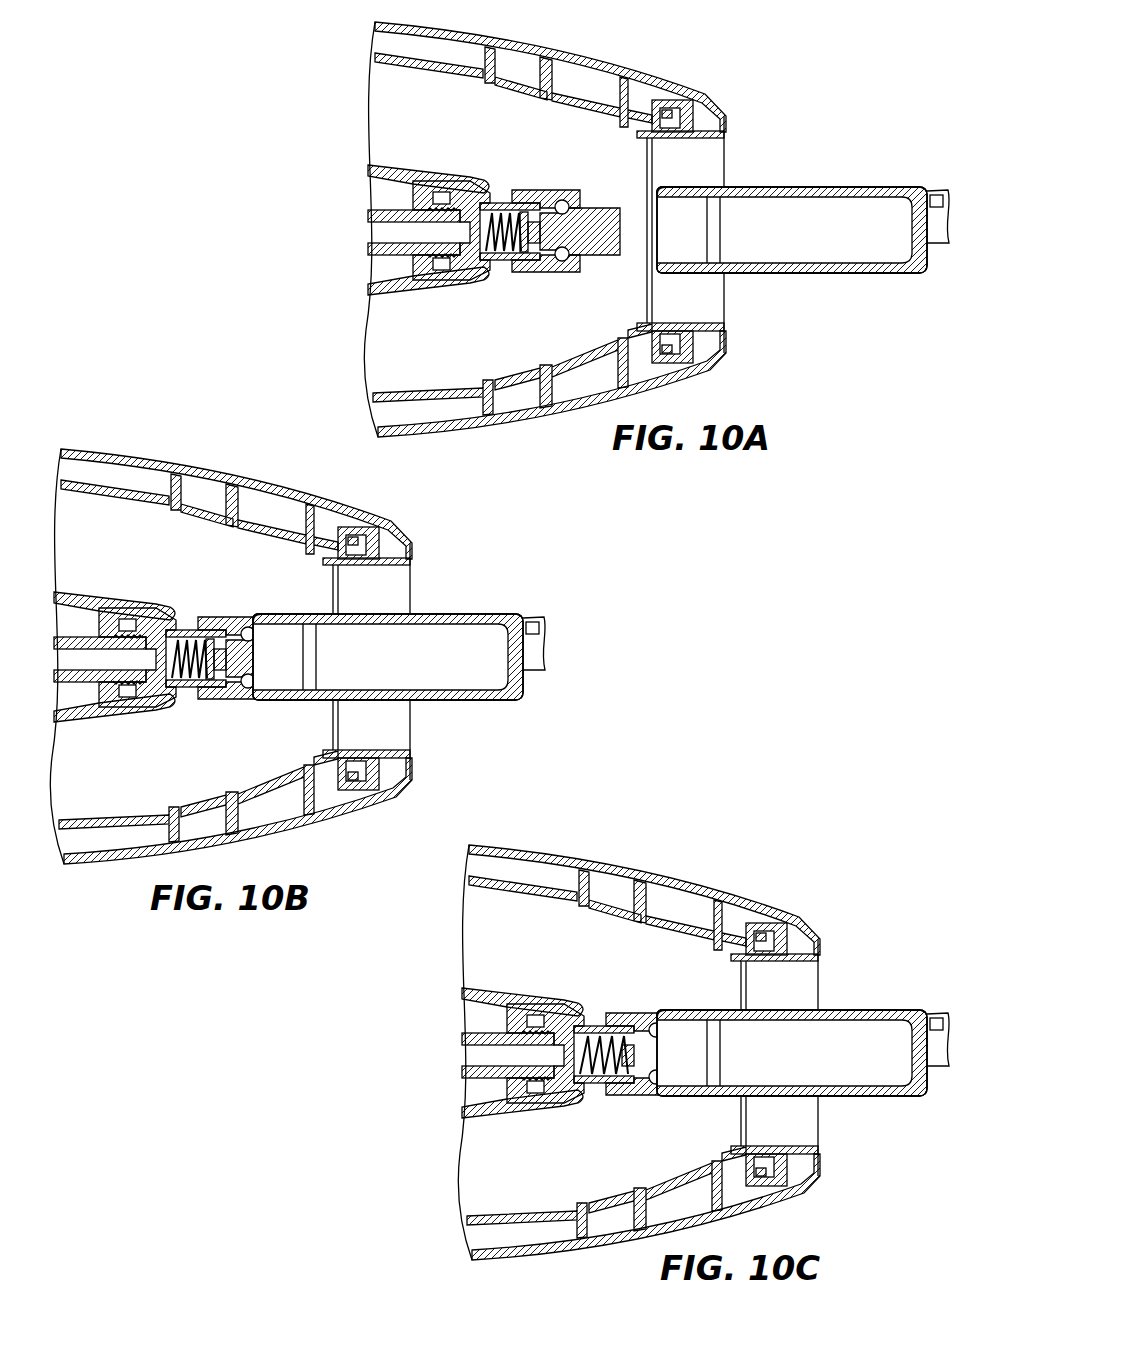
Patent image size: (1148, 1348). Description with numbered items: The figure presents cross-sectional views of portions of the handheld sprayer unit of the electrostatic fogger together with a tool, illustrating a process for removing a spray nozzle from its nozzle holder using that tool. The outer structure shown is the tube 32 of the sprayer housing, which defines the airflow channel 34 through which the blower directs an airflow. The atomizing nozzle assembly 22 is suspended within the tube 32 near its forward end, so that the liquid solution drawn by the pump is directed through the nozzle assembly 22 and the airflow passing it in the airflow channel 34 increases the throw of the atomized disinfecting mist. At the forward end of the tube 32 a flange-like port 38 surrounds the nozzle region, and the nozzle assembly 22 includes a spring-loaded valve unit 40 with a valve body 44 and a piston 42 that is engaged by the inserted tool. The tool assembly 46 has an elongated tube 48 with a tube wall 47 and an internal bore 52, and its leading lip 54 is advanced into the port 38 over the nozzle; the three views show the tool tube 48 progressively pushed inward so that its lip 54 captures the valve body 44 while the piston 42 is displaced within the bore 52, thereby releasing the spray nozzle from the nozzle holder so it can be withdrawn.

In FIG. 10A, the atomizing nozzle assembly 22 is at (565, 145).
In FIG. 10B, the atomizing nozzle assembly 22 is at (233, 562).
In FIG. 10C, the atomizing nozzle assembly 22 is at (641, 962).
In FIG. 10A, the tube 32 is at (563, 53).
In FIG. 10B, the tube 32 is at (200, 470).
In FIG. 10C, the tube 32 is at (610, 868).
In FIG. 10A, the airflow channel 34 is at (485, 332).
In FIG. 10B, the airflow channel 34 is at (171, 759).
In FIG. 10C, the airflow channel 34 is at (579, 1155).
In FIG. 10A, the flange 38 is at (728, 298).
In FIG. 10B, the flange 38 is at (414, 725).
In FIG. 10C, the flange 38 is at (822, 1121).
In FIG. 10A, the valve assembly 40 is at (523, 180).
In FIG. 10B, the valve assembly 40 is at (205, 607).
In FIG. 10C, the valve assembly 40 is at (613, 1003).
In FIG. 10A, the piston 42 is at (598, 256).
In FIG. 10B, the piston 42 is at (284, 683).
In FIG. 10C, the piston 42 is at (758, 1076).
In FIG. 10A, the valve body 44 is at (527, 272).
In FIG. 10B, the valve body 44 is at (210, 700).
In FIG. 10C, the valve body 44 is at (616, 1096).
In FIG. 10A, the coupling assembly 46 is at (892, 333).
In FIG. 10B, the coupling assembly 46 is at (540, 581).
In FIG. 10C, the coupling assembly 46 is at (898, 920).
In FIG. 10A, the tube wall 47 is at (887, 188).
In FIG. 10B, the tube wall 47 is at (482, 612).
In FIG. 10C, the tube wall 47 is at (890, 1009).
In FIG. 10A, the tube 48 is at (783, 182).
In FIG. 10B, the tube 48 is at (347, 589).
In FIG. 10C, the tube 48 is at (755, 988).
In FIG. 10A, the bore 52 is at (817, 233).
In FIG. 10B, the bore 52 is at (473, 662).
In FIG. 10C, the bore 52 is at (883, 1058).
In FIG. 10A, the seal lip 54 is at (660, 189).
In FIG. 10B, the seal lip 54 is at (240, 619).
In FIG. 10C, the seal lip 54 is at (644, 1019).